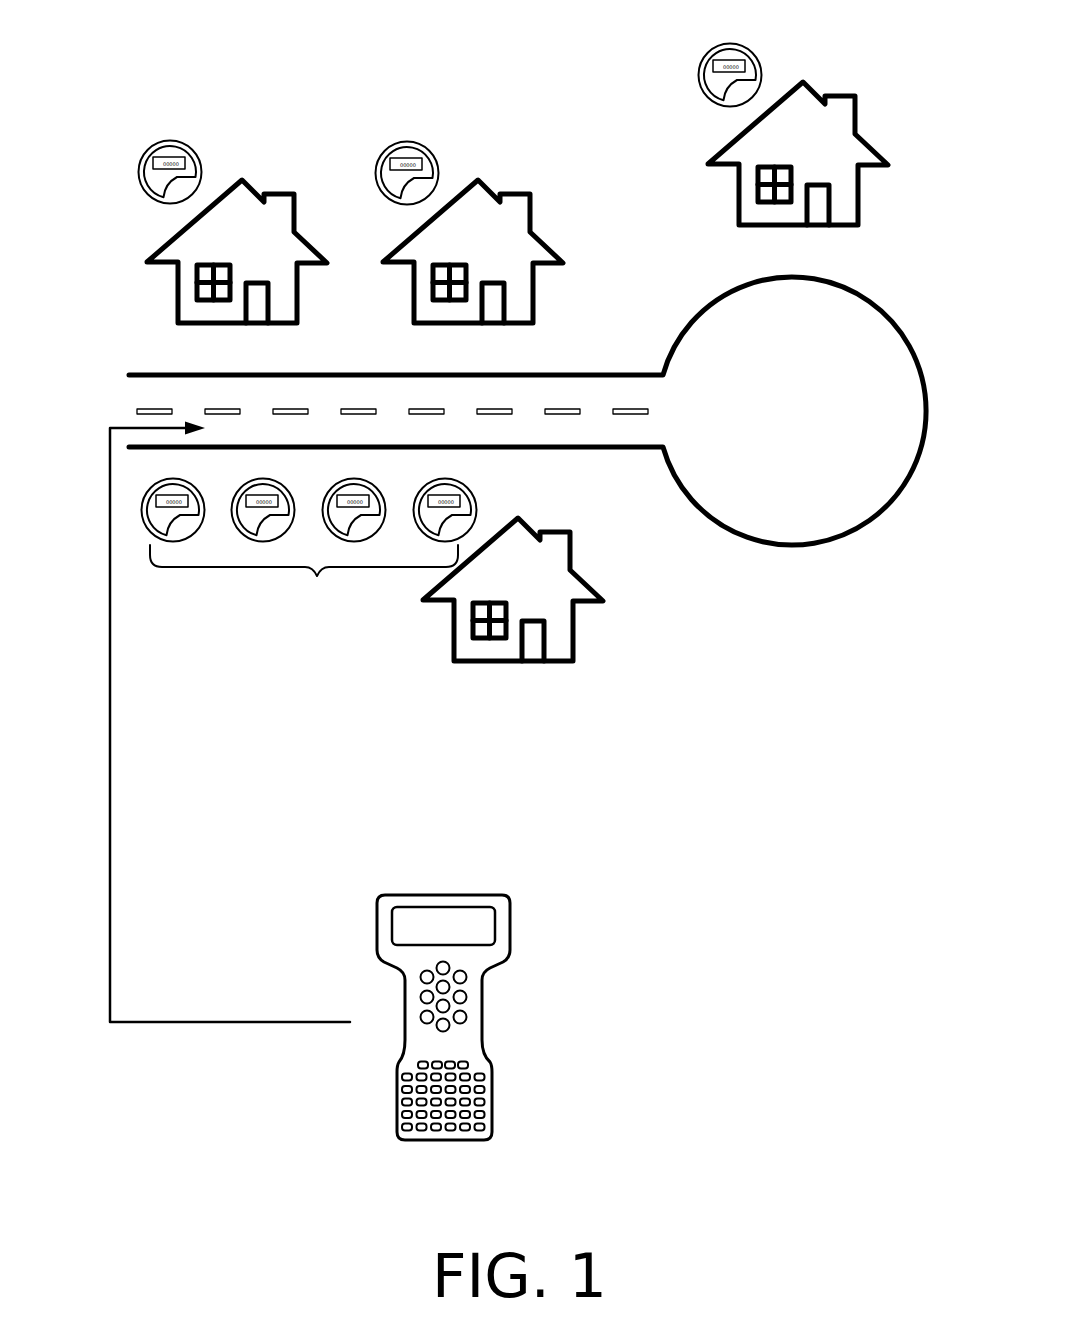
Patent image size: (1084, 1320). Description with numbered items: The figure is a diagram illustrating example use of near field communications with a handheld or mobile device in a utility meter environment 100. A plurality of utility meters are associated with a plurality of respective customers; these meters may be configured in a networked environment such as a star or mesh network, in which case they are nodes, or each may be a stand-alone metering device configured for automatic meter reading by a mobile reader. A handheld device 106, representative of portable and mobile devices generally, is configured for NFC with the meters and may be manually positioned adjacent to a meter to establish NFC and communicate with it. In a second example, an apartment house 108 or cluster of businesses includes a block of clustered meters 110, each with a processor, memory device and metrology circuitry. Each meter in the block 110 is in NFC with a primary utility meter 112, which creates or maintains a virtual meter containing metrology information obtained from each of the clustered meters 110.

The utility meter environment 100 is at (243, 44).
The handheld device 106 is at (553, 903).
The apartment house 108 is at (545, 694).
The block of clustered meters 110 is at (367, 556).
The primary utility meter 112 is at (477, 510).